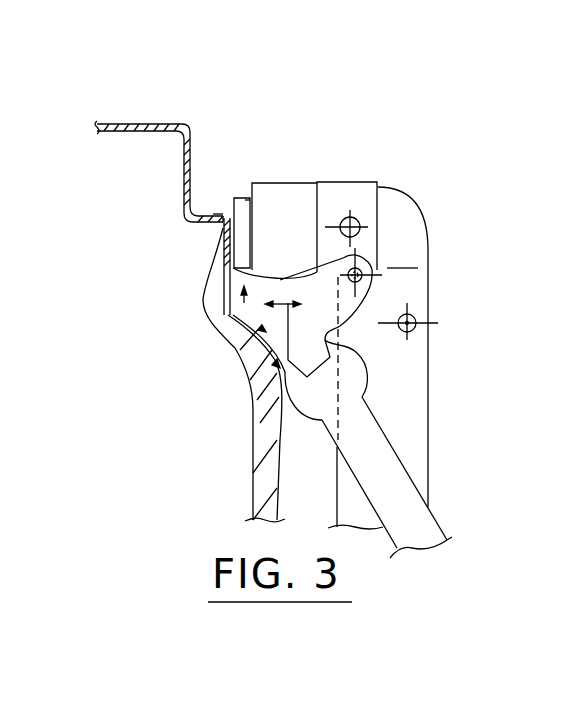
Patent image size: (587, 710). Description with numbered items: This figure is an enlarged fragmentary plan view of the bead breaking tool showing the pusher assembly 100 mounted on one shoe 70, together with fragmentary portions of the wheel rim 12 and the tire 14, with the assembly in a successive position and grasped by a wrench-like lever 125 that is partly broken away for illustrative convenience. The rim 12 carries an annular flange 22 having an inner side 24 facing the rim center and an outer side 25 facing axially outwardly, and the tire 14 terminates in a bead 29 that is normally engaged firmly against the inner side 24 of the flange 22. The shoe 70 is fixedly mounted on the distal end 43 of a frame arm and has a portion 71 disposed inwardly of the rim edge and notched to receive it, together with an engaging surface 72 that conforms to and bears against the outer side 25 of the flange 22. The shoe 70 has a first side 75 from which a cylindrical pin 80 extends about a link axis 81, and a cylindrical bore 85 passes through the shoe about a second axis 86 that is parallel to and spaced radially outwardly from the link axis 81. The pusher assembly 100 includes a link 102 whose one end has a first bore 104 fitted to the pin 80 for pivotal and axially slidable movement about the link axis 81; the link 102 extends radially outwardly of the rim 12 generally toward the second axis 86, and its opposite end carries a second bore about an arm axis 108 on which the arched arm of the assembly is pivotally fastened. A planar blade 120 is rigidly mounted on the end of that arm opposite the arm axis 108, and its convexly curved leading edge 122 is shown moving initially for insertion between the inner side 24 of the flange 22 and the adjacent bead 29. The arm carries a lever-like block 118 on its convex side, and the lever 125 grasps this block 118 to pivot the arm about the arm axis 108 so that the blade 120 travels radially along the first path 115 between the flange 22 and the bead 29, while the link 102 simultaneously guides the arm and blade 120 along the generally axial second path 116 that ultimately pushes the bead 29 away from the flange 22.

The wheel rim 12 is at (120, 126).
The annular flange 22 is at (192, 212).
The shoe portion 71 is at (245, 200).
The engaging surface 72 is at (213, 214).
The outer side of flange 25 is at (252, 185).
The inner side of flange 24 is at (223, 220).
The bead 29 is at (222, 236).
The leading edge 122 is at (224, 249).
The blade 120 is at (225, 268).
The link 102 is at (313, 237).
The first bore 104 is at (357, 216).
The cylindrical pin 80 is at (343, 216).
The link axis 81 is at (350, 216).
The shoe 70 is at (412, 205).
The first side of shoe 75 is at (402, 259).
The arm axis 108 is at (378, 277).
The cylindrical bore 85 is at (416, 320).
The second axis 86 is at (412, 338).
The first path 115 is at (231, 341).
The second path 116 is at (250, 380).
The pusher assembly 100 is at (246, 428).
The tire 14 is at (253, 512).
The block 118 is at (322, 364).
The distal end of arm 43 is at (416, 478).
The wrench-like lever 125 is at (418, 537).